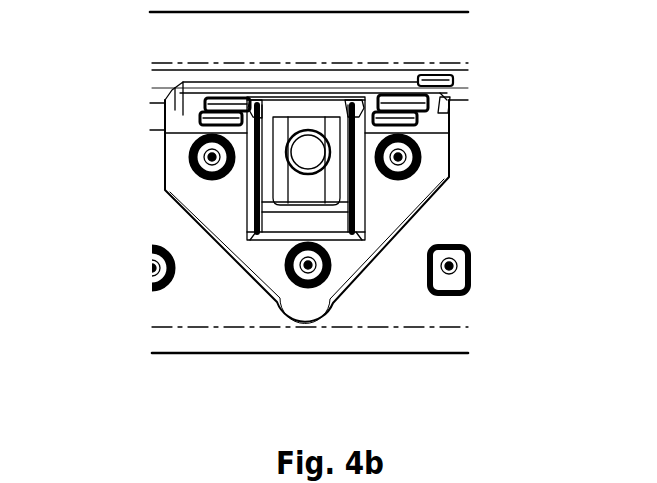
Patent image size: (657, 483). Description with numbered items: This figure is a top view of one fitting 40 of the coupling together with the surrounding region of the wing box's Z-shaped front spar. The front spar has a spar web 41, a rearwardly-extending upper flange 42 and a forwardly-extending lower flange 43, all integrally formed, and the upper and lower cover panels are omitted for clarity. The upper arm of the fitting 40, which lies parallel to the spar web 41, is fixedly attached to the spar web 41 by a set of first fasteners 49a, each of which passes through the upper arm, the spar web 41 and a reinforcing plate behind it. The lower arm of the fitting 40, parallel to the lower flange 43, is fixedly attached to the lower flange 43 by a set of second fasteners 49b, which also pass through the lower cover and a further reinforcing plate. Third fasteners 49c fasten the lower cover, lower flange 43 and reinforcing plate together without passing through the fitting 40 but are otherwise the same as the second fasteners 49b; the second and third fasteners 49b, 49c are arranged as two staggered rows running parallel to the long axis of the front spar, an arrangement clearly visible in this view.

The fitting 40 is at (350, 265).
The spar web 41 is at (460, 88).
The upper flange 42 is at (175, 38).
The lower flange 43 is at (218, 313).
The first fasteners 49a is at (222, 100).
The second fasteners 49b is at (285, 260).
The third fasteners 49c is at (155, 267).